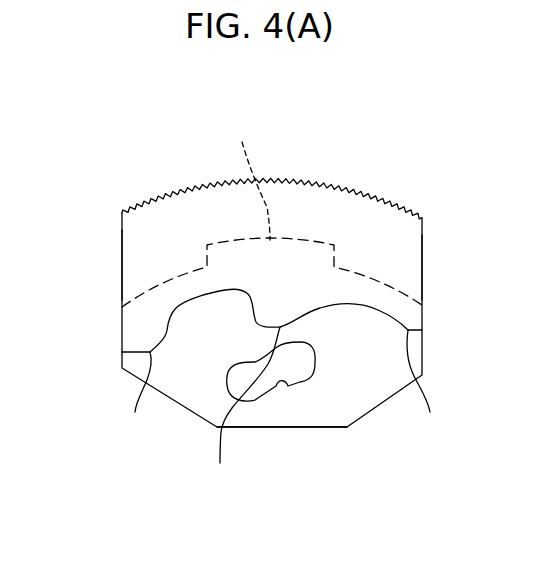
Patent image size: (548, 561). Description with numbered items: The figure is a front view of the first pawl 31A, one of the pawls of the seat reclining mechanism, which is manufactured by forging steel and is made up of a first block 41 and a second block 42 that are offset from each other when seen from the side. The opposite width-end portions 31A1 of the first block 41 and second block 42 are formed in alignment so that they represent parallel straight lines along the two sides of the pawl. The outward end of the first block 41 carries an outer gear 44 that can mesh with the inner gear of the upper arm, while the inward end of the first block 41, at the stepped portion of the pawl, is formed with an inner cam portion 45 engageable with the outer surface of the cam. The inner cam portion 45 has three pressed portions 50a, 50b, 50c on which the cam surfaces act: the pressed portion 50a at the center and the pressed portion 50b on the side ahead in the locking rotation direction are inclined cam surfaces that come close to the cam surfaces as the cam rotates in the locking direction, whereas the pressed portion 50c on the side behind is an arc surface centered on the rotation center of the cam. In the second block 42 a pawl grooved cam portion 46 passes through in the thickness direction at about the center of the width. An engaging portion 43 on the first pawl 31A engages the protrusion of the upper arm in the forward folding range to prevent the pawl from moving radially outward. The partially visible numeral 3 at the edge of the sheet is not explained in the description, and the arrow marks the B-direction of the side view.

The first pawl 31A is at (341, 170).
The opposite width-end portions 31A1 is at (422, 253).
The first block 41 is at (370, 218).
The second block 42 is at (323, 420).
The engaging portion 43 is at (249, 178).
The outer gear 44 is at (190, 188).
The inner cam portion 45 is at (314, 322).
The pawl grooved cam portion 46 is at (276, 386).
The pressed portion 50a is at (239, 412).
The pressed portion 50b is at (135, 398).
The pressed portion 50c is at (433, 387).
The bolt 3 is at (515, 300).